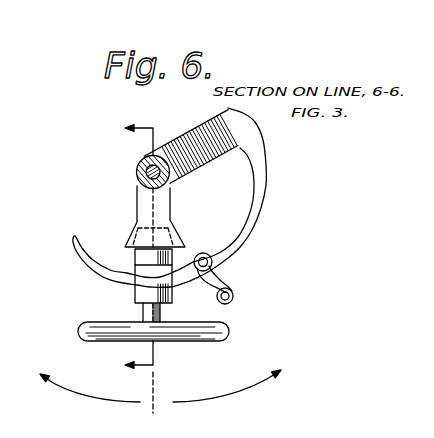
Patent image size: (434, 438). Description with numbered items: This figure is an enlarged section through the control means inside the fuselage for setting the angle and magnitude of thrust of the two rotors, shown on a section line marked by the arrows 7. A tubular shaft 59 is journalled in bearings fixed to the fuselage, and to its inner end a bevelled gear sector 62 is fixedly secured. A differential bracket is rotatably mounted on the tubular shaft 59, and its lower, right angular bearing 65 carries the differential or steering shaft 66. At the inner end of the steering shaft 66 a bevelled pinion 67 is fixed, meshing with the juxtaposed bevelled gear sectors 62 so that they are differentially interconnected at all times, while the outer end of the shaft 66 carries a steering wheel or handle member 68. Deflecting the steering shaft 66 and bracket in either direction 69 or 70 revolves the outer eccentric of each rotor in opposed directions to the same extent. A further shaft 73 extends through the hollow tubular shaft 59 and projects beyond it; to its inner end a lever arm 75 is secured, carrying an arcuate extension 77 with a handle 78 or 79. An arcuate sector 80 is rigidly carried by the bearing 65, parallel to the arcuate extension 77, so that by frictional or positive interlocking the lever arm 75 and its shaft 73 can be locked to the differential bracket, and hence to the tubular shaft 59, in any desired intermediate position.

The section line 7- 7 is at (127, 264).
The tubular shaft 59 is at (148, 158).
The bevelled gear sector 62 is at (137, 207).
The lower right angular bearing 65 is at (137, 292).
The differential or steering shaft 66 is at (161, 321).
The bevelled pinion 67 is at (104, 259).
The steering wheel or handle member 68 is at (228, 331).
The direction of deflection 69 is at (71, 379).
The direction of deflection 70 is at (242, 378).
The shaft 73 is at (137, 171).
The lever arm 75 is at (193, 138).
The arcuate extension 77 is at (250, 177).
The handle 78 is at (224, 288).
The handle 79 is at (203, 252).
The arcuate sector 80 is at (95, 231).